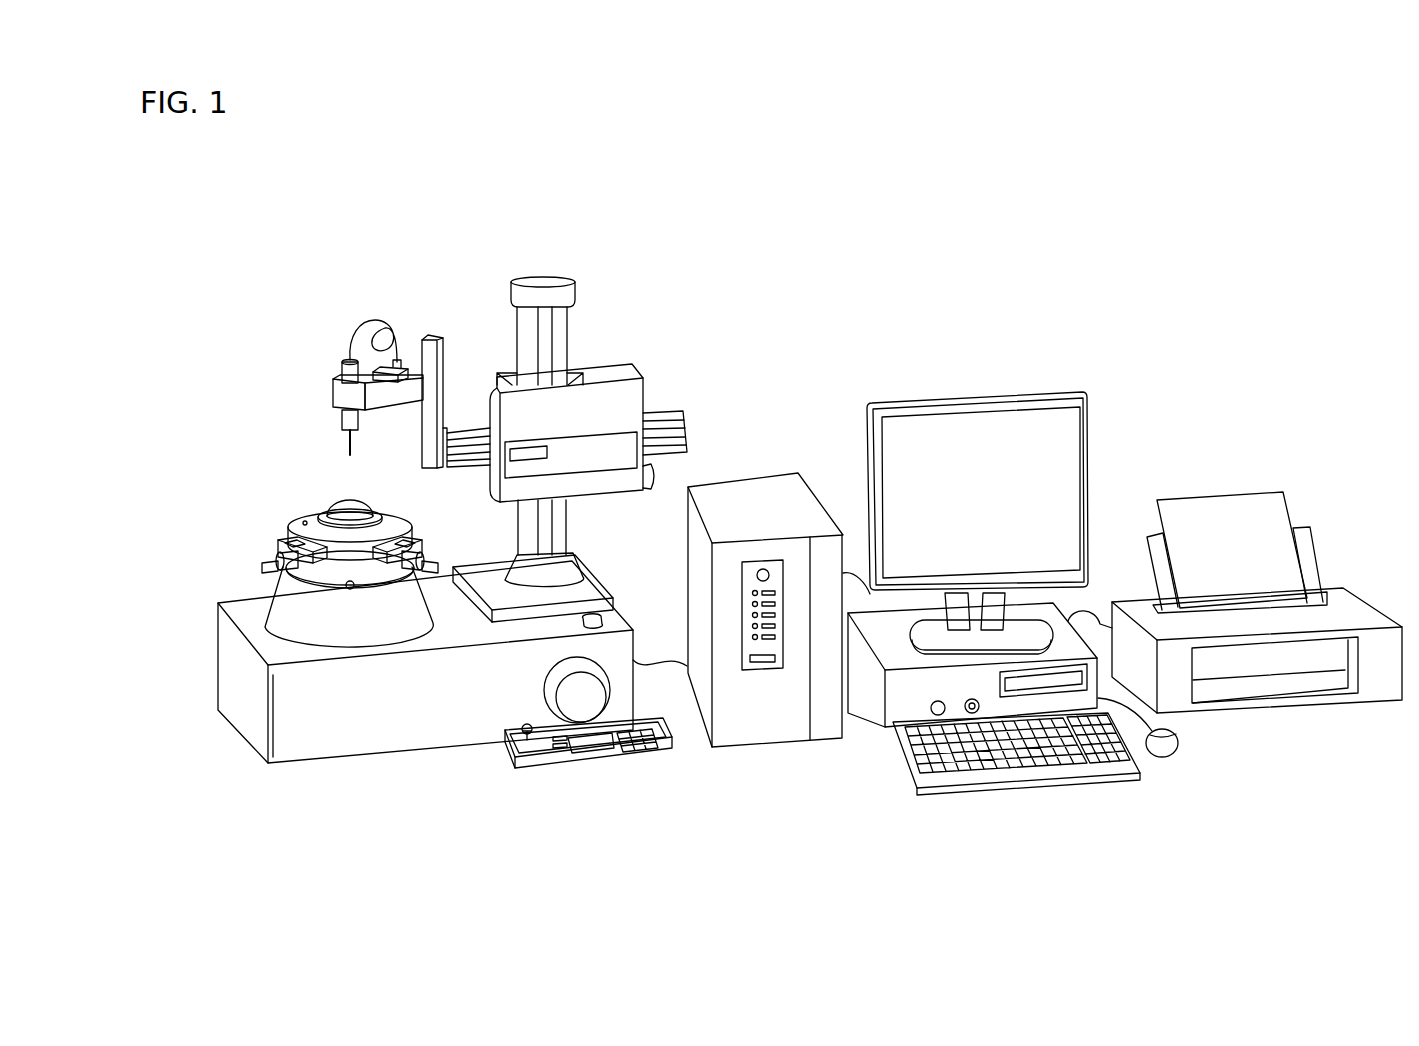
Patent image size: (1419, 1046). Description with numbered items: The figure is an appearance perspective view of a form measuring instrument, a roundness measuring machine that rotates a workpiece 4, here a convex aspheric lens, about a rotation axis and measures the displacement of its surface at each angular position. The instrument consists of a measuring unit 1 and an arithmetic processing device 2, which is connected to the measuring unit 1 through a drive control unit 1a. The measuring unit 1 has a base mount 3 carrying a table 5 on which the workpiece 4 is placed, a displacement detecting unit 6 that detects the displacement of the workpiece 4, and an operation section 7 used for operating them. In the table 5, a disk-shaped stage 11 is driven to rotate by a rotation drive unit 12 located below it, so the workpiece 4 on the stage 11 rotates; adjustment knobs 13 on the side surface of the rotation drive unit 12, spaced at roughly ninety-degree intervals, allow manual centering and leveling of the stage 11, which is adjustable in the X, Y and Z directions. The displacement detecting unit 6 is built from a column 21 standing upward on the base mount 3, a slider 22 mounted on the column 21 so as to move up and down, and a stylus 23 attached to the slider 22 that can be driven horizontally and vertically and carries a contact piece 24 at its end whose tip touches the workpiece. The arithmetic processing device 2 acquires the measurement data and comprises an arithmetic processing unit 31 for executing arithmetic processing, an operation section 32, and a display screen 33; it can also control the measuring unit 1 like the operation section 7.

The measuring unit 1 is at (513, 160).
The drive control unit 1a is at (763, 447).
The arithmetic processing device 2 is at (938, 330).
The base mount 3 is at (322, 757).
The workpiece 4 is at (328, 503).
The table 5 is at (178, 562).
The displacement detecting unit 6 is at (489, 309).
The operation section 7 is at (565, 766).
The stage 11 is at (293, 522).
The rotation drive unit 12 is at (290, 592).
The adjustment knobs 13 is at (278, 547).
The column 21 is at (562, 316).
The slider 22 is at (625, 385).
The stylus 23 is at (437, 466).
The contact piece 24 is at (348, 453).
The arithmetic processing unit 31 is at (888, 722).
The operation section 32 is at (1160, 760).
The display screen 33 is at (997, 408).